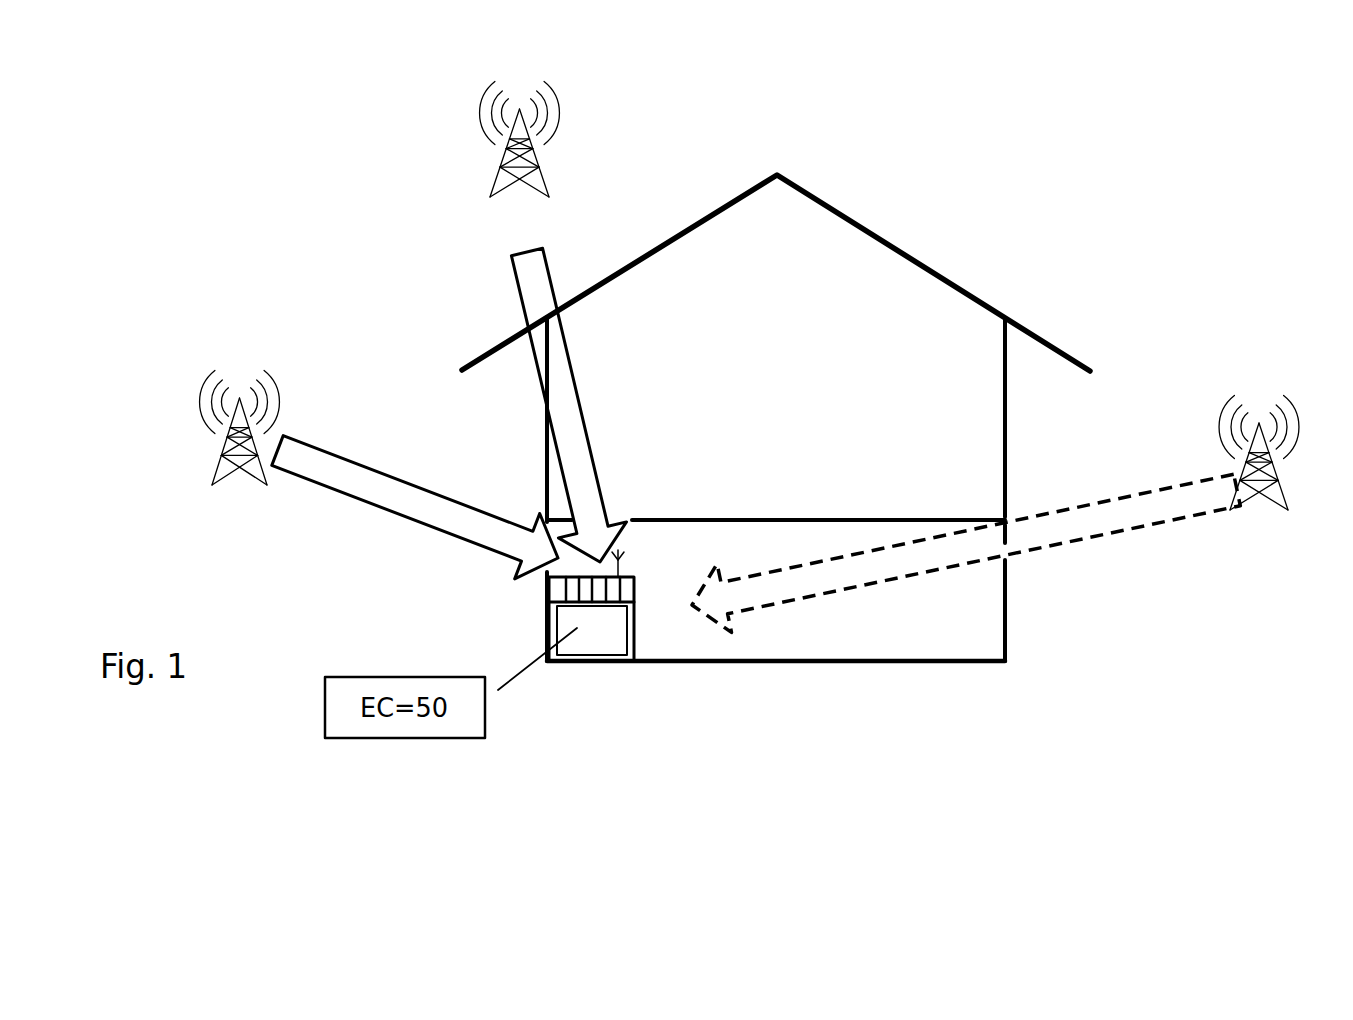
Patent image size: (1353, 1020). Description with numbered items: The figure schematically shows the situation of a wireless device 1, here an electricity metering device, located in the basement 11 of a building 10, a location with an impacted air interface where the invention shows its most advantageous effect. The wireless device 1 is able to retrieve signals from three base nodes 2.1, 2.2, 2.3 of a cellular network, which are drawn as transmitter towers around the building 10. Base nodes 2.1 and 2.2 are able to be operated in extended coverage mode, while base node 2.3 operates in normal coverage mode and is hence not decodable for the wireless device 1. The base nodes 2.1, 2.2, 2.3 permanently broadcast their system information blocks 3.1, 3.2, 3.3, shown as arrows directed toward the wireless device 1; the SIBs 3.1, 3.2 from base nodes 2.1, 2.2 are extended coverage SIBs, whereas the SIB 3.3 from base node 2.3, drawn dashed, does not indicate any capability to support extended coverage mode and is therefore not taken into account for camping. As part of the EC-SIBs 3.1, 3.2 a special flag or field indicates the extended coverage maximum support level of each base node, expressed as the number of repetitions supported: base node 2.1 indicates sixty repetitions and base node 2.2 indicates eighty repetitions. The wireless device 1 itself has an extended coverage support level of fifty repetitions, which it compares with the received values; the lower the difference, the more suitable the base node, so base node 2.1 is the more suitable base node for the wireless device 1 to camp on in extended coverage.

The wireless device 1 is at (591, 605).
The base node 2.1 is at (240, 348).
The base node 2.2 is at (468, 128).
The base node 2.3 is at (1259, 373).
The system information block 3.1 is at (468, 532).
The system information block 3.2 is at (583, 440).
The system information block 3.3 is at (1108, 520).
The building 10 is at (922, 150).
The basement 11 is at (920, 638).